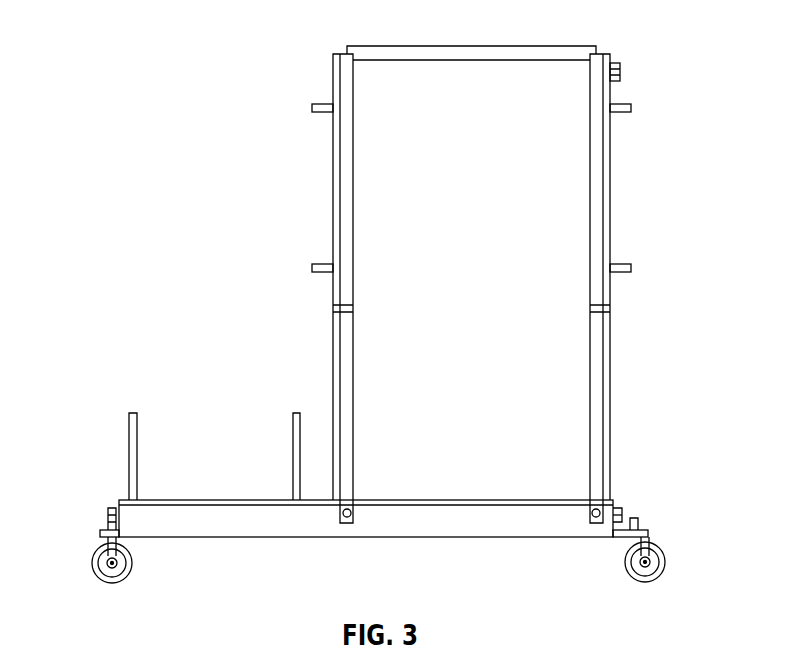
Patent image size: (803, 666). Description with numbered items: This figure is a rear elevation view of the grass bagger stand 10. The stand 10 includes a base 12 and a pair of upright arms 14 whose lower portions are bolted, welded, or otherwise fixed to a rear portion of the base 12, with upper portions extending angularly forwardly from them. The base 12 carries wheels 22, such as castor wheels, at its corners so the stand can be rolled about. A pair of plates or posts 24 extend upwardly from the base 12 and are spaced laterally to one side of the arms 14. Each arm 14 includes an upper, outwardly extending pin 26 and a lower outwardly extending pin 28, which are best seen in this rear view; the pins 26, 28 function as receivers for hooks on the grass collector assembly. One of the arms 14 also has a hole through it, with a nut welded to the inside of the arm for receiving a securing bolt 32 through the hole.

The grass bagger stand 10 is at (143, 206).
The base 12 is at (477, 537).
The upright arms 14 is at (333, 186).
The wheels 22 is at (93, 560).
The plates or posts 24 is at (129, 427).
The upper outwardly extending pin 26 is at (312, 108).
The lower outwardly extending pin 28 is at (312, 268).
The securing bolt 32 is at (616, 63).